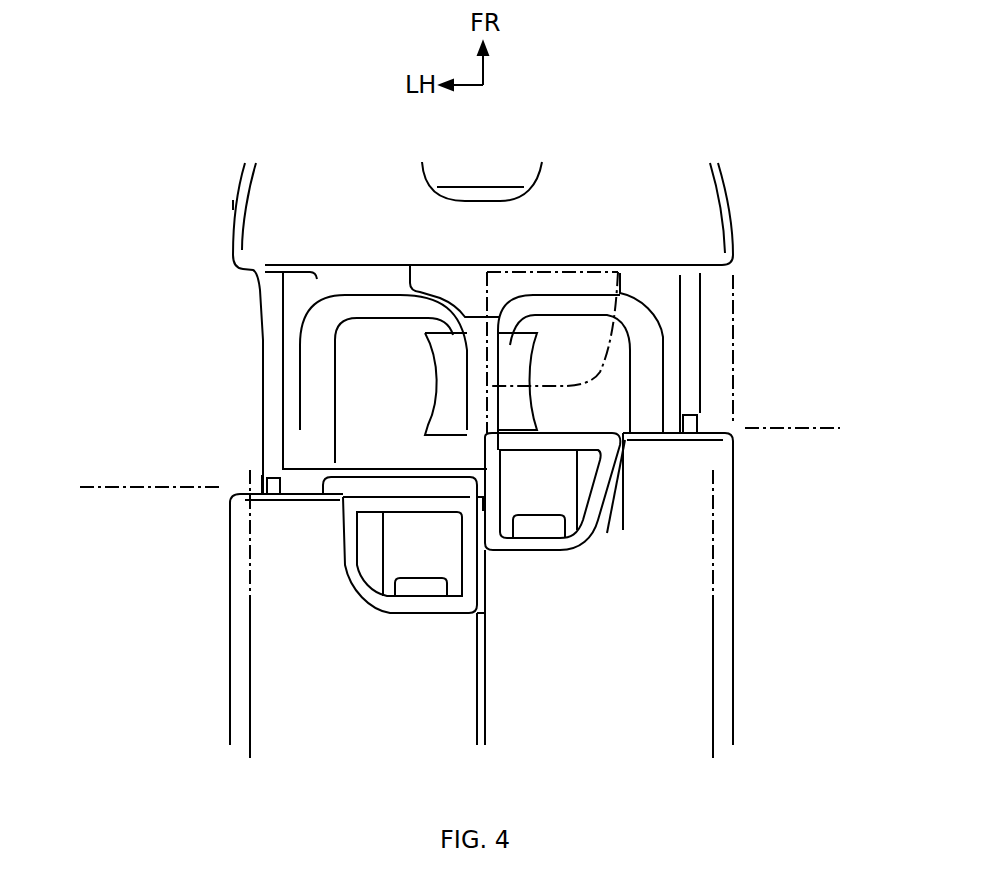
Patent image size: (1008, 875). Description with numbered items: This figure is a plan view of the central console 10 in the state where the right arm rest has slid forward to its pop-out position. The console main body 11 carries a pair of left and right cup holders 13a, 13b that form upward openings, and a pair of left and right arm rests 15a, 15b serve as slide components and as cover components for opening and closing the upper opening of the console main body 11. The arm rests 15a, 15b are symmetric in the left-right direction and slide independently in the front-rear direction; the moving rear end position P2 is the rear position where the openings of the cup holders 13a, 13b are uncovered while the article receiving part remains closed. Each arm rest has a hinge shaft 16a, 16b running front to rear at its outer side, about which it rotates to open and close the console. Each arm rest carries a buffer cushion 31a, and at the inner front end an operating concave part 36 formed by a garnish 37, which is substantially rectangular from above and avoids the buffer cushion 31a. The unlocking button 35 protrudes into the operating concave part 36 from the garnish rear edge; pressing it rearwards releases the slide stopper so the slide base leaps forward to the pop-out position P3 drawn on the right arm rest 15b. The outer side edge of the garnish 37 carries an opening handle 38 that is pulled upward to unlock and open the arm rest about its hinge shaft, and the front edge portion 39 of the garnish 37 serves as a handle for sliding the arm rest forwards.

The central console 10 is at (202, 192).
The console main body 11 is at (262, 406).
The left cup holder 13a is at (357, 364).
The right cup holder 13b is at (655, 350).
The left arm rest 15a is at (230, 546).
The right arm rest 15b is at (735, 505).
The hinge shaft 16a is at (255, 665).
The hinge shaft 16b is at (713, 645).
The buffer cushion 31a is at (265, 588).
The unlocking button 35 is at (420, 590).
The operating concave part 36 is at (405, 558).
The garnish 37 is at (450, 485).
The opening handle 38 is at (370, 523).
The front edge portion 39 is at (403, 500).
The moving rear end position P2 is at (115, 487).
The pop-out position P3 is at (800, 428).